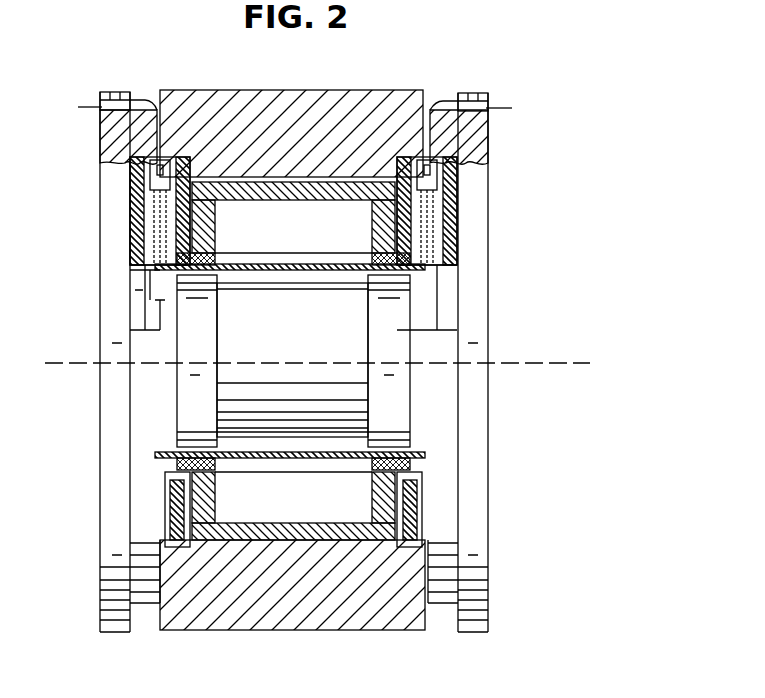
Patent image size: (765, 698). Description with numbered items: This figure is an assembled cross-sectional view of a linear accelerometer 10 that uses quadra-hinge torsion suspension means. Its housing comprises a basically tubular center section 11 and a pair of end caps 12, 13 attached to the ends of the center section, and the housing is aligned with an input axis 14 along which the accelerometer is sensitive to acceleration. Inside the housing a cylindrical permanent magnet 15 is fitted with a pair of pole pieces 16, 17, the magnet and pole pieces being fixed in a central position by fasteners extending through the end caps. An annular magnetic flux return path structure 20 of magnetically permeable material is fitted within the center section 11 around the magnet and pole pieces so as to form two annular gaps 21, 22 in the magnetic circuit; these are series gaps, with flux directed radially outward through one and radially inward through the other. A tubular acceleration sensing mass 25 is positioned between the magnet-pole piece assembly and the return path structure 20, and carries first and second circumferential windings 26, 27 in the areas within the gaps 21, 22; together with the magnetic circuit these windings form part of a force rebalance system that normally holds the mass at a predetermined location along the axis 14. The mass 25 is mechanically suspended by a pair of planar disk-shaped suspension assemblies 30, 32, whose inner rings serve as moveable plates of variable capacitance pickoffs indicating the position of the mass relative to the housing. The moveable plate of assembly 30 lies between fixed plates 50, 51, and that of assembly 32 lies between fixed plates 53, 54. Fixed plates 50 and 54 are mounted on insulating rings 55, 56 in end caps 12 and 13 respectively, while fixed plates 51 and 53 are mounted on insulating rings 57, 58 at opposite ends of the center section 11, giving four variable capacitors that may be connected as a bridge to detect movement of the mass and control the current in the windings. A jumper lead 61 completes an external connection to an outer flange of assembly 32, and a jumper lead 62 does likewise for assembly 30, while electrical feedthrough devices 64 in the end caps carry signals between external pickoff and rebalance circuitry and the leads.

The linear accelerometer 10 is at (190, 72).
The center section 11 is at (257, 90).
The end cap 12 is at (100, 290).
The end cap 13 is at (488, 250).
The input axis 14 is at (530, 363).
The cylindrical permanent magnet 15 is at (298, 440).
The pole piece 16 is at (160, 302).
The pole piece 17 is at (432, 381).
The annular magnetic flux return path structure 20 is at (289, 545).
The annular gap 21 is at (224, 480).
The annular gap 22 is at (362, 478).
The acceleration sensing mass 25 is at (281, 267).
The first circumferential winding 26 is at (193, 450).
The second circumferential winding 27 is at (397, 448).
The suspension assembly 30 is at (157, 98).
The suspension assembly 32 is at (430, 98).
The fixed capacitor plate 50 is at (130, 235).
The fixed capacitor plate 51 is at (203, 247).
The fixed capacitor plate 53 is at (407, 220).
The fixed capacitor plate 54 is at (460, 225).
The insulating ring 55 is at (130, 185).
The insulating ring 56 is at (462, 170).
The insulating ring 57 is at (190, 165).
The insulating ring 58 is at (383, 165).
The jumper lead 61 is at (470, 128).
The jumper lead 62 is at (130, 136).
The electrical feedthrough device 64 is at (108, 94).